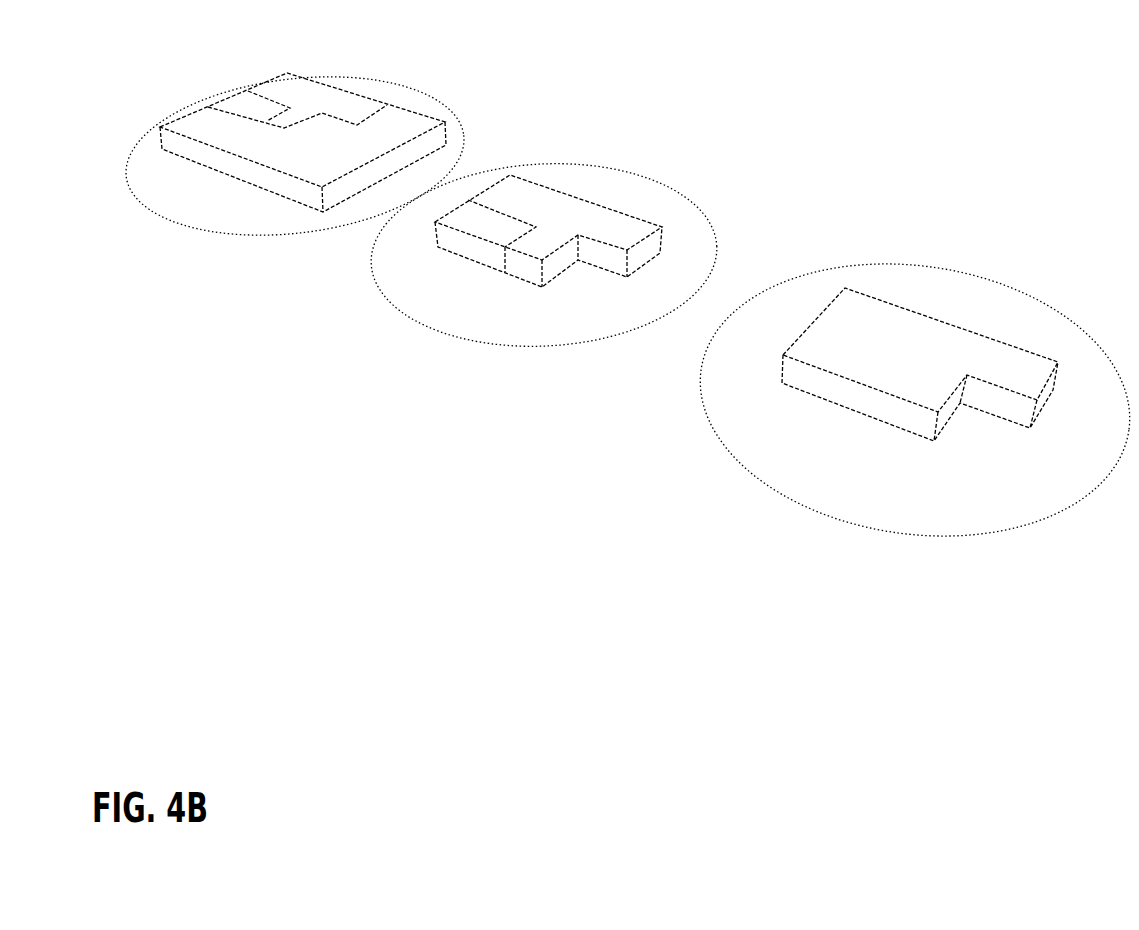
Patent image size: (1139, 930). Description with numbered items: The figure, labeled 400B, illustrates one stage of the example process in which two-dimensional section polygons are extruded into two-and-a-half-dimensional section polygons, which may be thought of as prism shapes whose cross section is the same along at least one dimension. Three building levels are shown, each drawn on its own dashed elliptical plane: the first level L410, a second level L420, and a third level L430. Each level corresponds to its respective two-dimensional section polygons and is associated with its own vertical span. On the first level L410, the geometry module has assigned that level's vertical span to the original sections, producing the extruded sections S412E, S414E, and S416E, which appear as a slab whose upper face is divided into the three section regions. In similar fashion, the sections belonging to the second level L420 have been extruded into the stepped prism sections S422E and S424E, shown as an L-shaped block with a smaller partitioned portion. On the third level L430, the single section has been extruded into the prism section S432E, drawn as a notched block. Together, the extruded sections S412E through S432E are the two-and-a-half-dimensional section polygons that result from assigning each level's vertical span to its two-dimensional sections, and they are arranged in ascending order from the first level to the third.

The three-level semiconductor structure 400B is at (170, 780).
The first level L410 is at (133, 266).
The 2.5-D section S412E is at (184, 125).
The 2.5-D section S414E is at (363, 61).
The 2.5-D section S416E is at (236, 97).
The level L420 is at (408, 385).
The 2.5-D section S422E is at (588, 163).
The 2.5-D section S424E is at (475, 217).
The level L430 is at (806, 571).
The 2.5-D section S432E is at (927, 349).